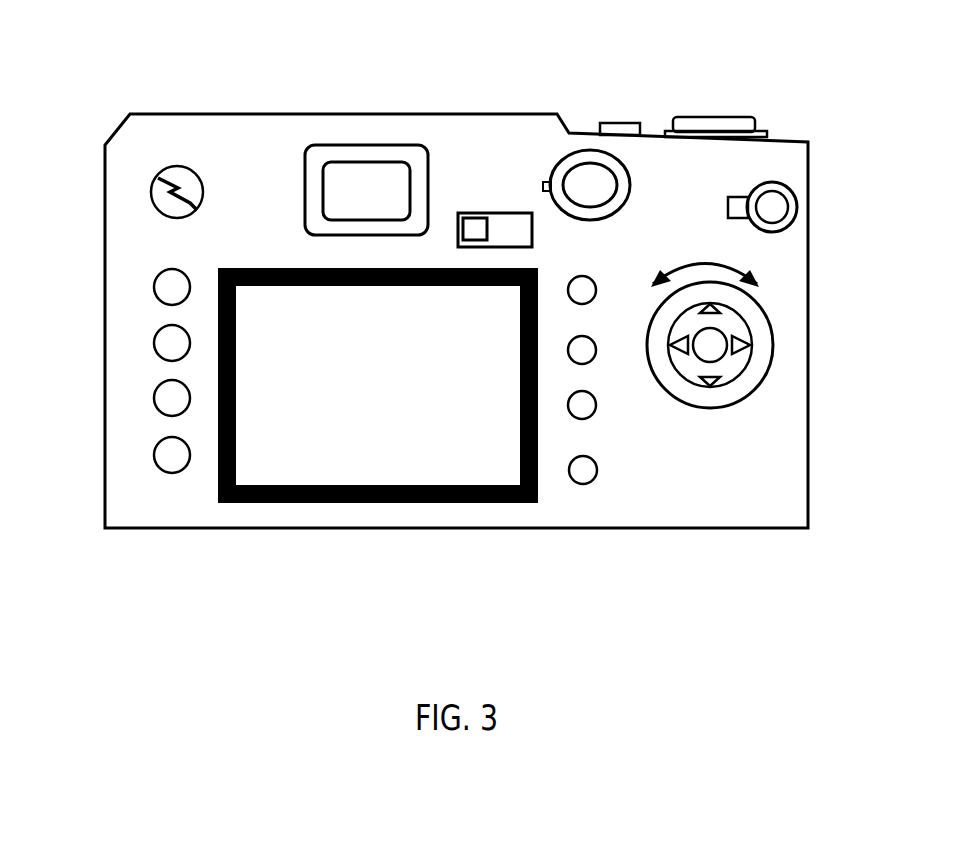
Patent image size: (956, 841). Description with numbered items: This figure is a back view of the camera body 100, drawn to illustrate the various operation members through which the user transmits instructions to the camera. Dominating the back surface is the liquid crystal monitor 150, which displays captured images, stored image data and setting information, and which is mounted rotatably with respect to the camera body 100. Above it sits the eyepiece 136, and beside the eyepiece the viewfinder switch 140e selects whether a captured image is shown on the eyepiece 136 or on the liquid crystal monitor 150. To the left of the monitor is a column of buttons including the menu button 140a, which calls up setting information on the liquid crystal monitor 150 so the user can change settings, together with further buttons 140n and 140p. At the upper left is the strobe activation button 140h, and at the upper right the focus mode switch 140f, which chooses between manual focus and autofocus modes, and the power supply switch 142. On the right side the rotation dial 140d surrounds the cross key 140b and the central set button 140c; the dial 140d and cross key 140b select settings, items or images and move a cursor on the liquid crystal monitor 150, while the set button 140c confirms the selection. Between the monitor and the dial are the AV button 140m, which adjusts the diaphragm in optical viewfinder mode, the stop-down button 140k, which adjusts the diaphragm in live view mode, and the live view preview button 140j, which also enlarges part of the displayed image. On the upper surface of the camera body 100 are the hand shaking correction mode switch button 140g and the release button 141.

The camera body 100 is at (243, 114).
The eyepiece 136 is at (368, 180).
The menu button 140a is at (170, 287).
The cross key 140b is at (742, 345).
The set button 140c is at (718, 357).
The rotation dial 140d is at (747, 312).
The viewfinder switch 140e is at (475, 227).
The focus mode switch 140f is at (590, 172).
The hand shaking correction mode switch button 140g is at (622, 122).
The strobe activation button 140h is at (178, 167).
The live view preview button 140j is at (583, 478).
The stop-down button 140k is at (586, 405).
The AV button 140m is at (586, 350).
The operation button 140n is at (170, 345).
The operation button 140p is at (170, 400).
The release button 141 is at (714, 116).
The power supply switch 142 is at (773, 210).
The liquid crystal monitor 150 is at (332, 470).